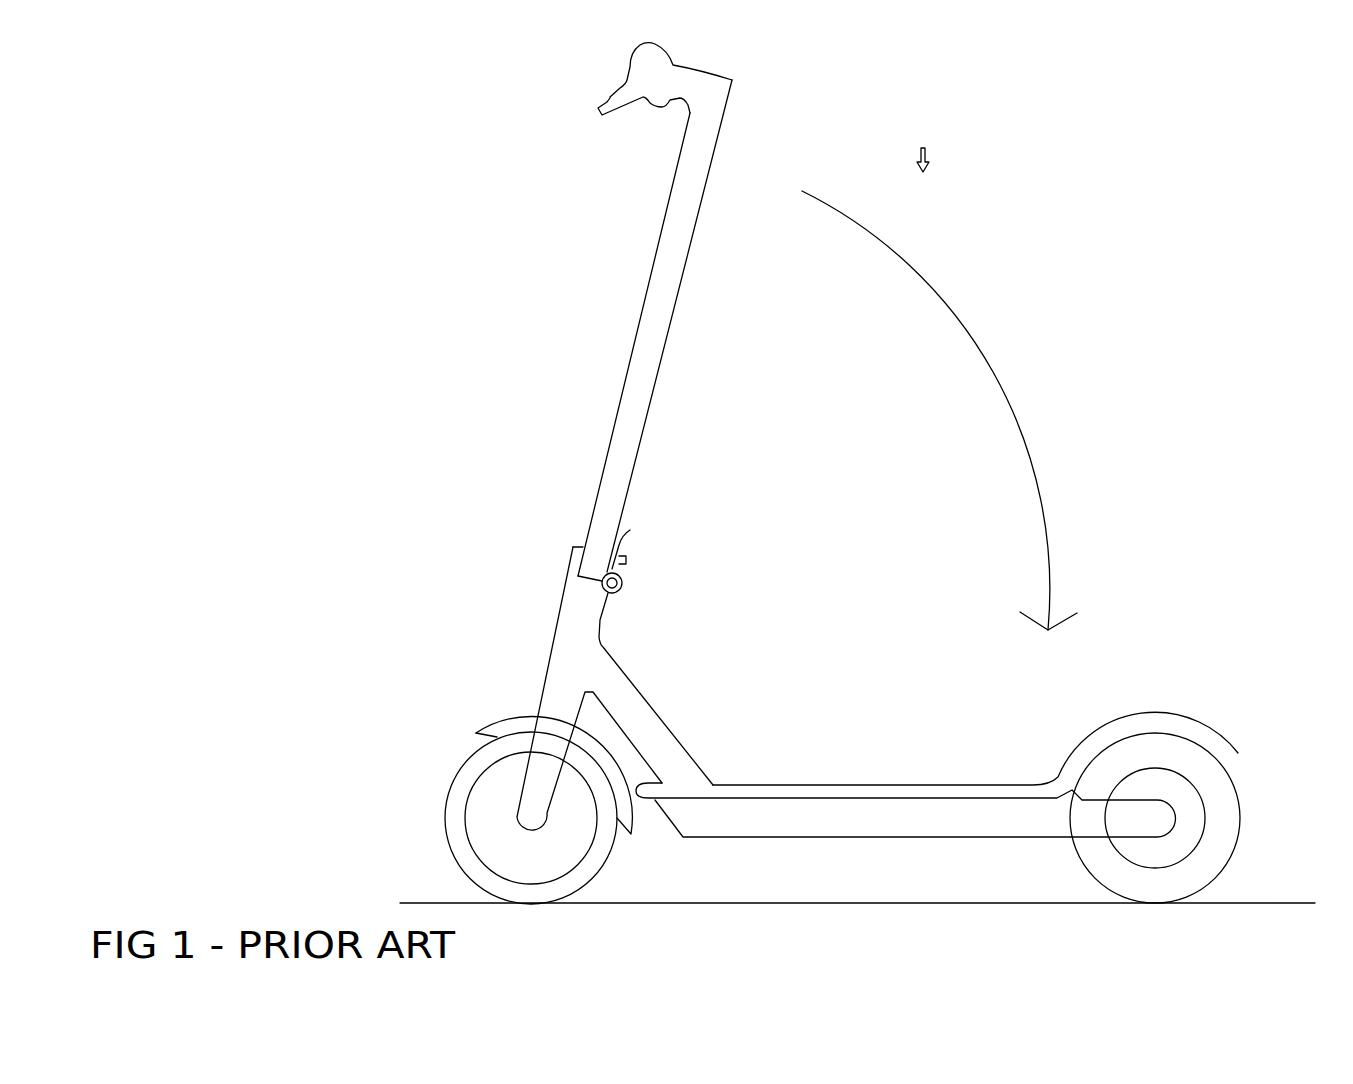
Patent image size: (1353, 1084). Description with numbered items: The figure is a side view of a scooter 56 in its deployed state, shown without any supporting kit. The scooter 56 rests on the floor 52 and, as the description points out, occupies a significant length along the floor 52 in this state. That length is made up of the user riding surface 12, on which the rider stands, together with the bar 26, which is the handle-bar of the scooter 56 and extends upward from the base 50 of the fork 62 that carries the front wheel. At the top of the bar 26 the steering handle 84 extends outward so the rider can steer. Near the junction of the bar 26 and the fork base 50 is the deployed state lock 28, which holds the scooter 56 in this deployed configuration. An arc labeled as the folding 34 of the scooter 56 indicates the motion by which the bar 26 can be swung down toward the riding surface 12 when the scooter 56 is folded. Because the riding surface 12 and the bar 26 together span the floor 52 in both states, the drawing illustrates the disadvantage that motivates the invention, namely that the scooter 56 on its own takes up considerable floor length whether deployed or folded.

The scooter steering handle 84 is at (642, 72).
The bar of scooter 26 is at (670, 277).
The deployed state lock 28 is at (622, 583).
The base of fork 50 is at (545, 668).
The fork of front wheel 62 is at (534, 812).
The riding surface 12 is at (777, 793).
The floor 52 is at (1268, 903).
The folding of scooter 34 is at (985, 356).
The scooter 56 is at (923, 145).